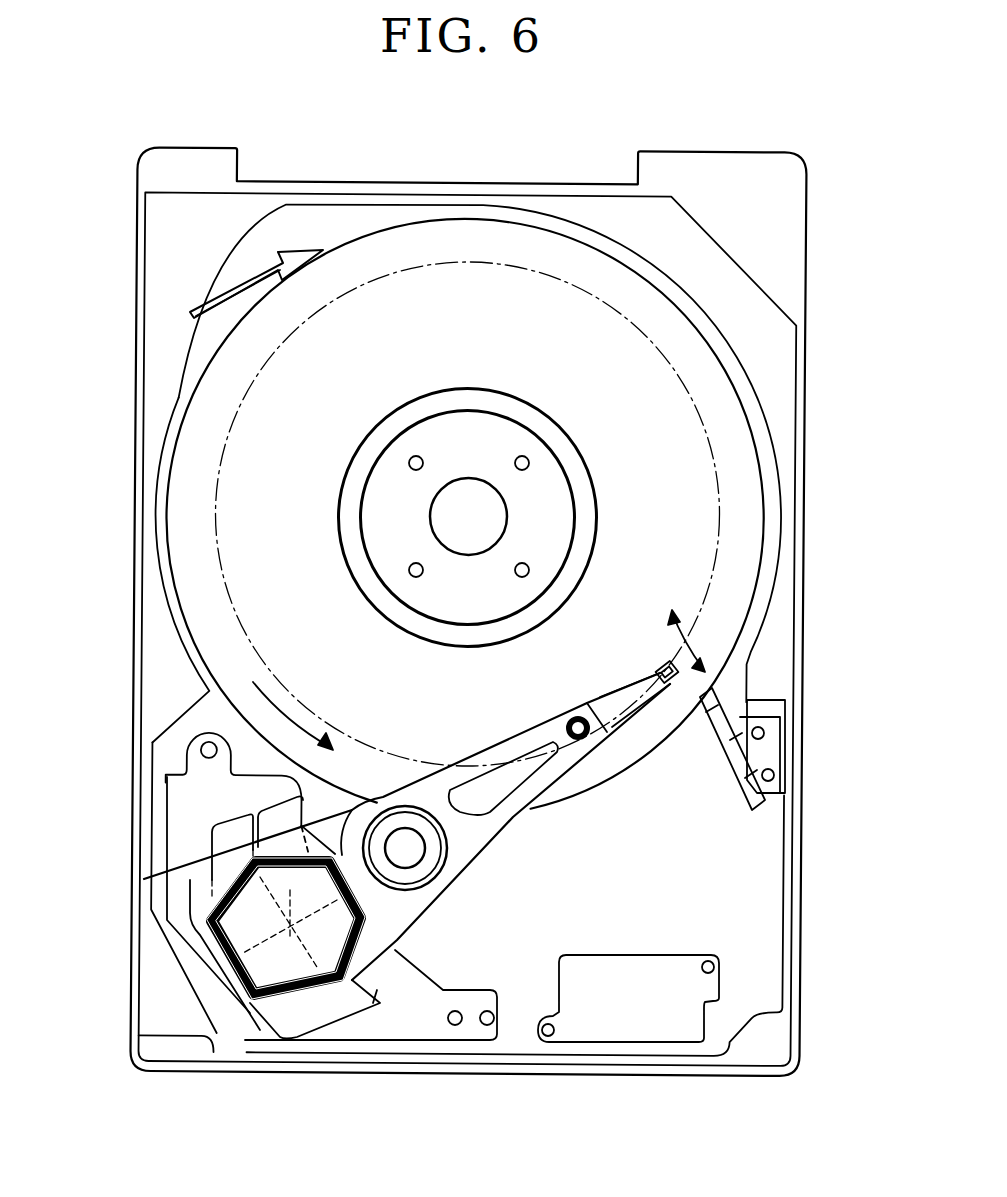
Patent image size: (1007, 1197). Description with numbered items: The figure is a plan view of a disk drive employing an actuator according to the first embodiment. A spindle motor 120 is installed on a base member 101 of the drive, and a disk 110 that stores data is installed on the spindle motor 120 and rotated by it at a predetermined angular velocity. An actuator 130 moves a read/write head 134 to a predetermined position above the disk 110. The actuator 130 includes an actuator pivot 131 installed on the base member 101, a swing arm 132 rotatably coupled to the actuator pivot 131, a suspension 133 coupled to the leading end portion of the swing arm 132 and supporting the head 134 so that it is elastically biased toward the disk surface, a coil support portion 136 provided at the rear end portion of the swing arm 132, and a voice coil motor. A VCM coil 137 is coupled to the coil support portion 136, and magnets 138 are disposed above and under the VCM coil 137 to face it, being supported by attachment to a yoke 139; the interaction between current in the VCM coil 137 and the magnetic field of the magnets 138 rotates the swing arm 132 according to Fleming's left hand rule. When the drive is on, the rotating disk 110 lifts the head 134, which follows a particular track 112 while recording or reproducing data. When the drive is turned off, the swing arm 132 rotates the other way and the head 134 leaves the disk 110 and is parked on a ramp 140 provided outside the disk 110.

The base member 101 is at (780, 648).
The disk 110 is at (753, 473).
The track 112 is at (712, 437).
The spindle motor 120 is at (490, 430).
The actuator 130 is at (424, 870).
The actuator pivot 131 is at (410, 860).
The swing arm 132 is at (527, 795).
The suspension 133 is at (617, 710).
The read/write head 134 is at (656, 664).
The coil support portion 136 is at (200, 893).
The VCM coil 137 is at (255, 1000).
The magnets 138 is at (393, 1003).
The yoke 139 is at (440, 1042).
The ramp 140 is at (742, 770).